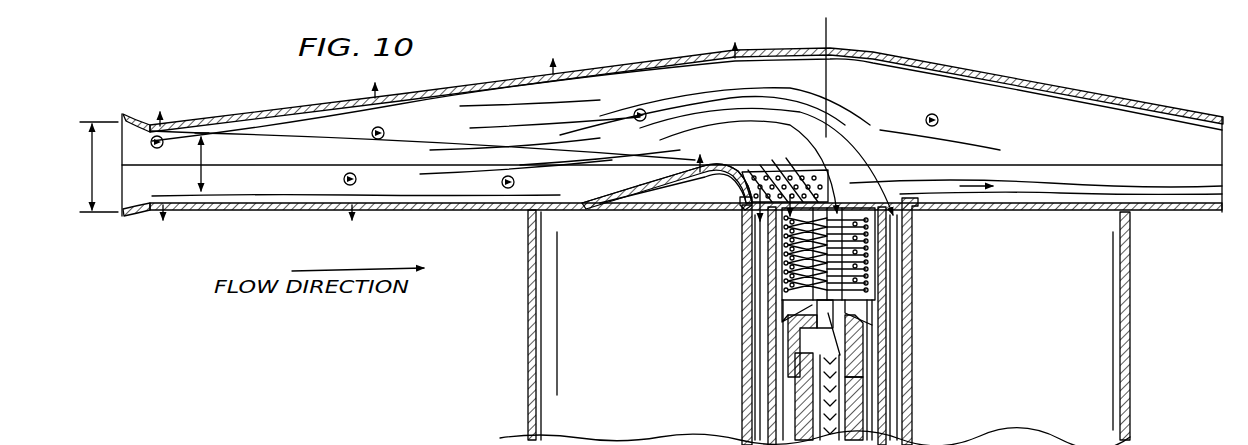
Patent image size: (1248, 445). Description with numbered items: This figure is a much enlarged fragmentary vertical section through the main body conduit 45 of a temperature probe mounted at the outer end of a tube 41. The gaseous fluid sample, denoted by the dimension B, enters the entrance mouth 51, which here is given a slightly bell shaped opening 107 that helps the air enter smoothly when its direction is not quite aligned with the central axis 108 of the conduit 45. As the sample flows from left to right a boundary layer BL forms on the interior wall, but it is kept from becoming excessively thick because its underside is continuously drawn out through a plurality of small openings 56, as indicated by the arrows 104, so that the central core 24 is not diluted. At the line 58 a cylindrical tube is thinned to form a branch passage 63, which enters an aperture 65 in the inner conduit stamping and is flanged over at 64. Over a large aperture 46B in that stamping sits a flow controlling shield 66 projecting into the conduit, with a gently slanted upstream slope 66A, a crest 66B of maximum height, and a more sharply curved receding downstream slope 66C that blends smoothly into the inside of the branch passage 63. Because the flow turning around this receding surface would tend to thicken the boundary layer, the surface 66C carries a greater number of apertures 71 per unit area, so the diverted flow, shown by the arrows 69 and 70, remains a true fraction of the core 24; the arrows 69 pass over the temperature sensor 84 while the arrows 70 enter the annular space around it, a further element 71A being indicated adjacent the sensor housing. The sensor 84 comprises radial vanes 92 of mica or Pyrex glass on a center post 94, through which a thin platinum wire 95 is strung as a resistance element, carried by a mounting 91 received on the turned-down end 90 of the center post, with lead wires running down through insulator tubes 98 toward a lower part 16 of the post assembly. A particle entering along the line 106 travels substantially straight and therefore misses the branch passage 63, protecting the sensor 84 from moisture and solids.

The spindle 16 is at (827, 338).
The central core 24 is at (198, 162).
The tube 41 is at (1127, 313).
The main body conduit 45 is at (963, 62).
The large aperture 46B is at (650, 210).
The entrance mouth 51 is at (125, 186).
The openings 56 is at (160, 148).
The line 58 is at (830, 38).
The thinned wall section / branch passage 63 is at (747, 280).
The flange 64 is at (729, 199).
The aperture 65 is at (913, 212).
The flow controlling shield 66 is at (674, 180).
The upstream slope 66A is at (627, 208).
The crest 66B is at (695, 172).
The downstream slope 66C is at (737, 192).
The arrows 69 is at (742, 150).
The arrows 70 is at (705, 158).
The apertures 71 is at (785, 174).
The inner sleeve 71A is at (883, 245).
The temperature sensor 84 is at (778, 255).
The turned-down upper end 90 is at (850, 410).
The mounting 91 is at (798, 318).
The radial vanes 92 is at (840, 305).
The center post 94 is at (835, 318).
The platinum wire 95 is at (855, 272).
The insulator tubes 98 is at (847, 408).
The arrows 104 is at (163, 114).
The line 106 is at (316, 137).
The bell shaped opening 107 is at (135, 118).
The central axis 108 is at (1172, 168).
The dimension B is at (99, 167).
The boundary layer BL is at (472, 68).